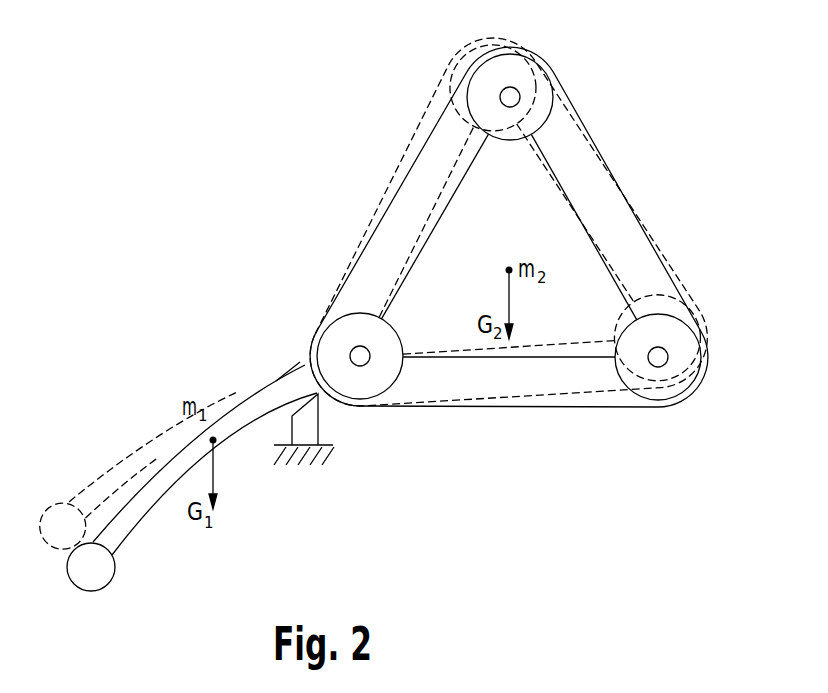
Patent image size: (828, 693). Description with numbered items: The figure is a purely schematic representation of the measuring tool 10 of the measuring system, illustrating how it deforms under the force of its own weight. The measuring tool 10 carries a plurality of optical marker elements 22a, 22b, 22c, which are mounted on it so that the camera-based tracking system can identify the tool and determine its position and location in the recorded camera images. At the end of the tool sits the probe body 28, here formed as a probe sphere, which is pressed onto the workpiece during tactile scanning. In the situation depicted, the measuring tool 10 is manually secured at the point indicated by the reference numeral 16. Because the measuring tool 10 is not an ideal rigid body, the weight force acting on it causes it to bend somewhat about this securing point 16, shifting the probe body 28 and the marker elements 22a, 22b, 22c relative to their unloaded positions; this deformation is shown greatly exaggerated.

The measuring tool 10 is at (246, 218).
The securing point 16 is at (298, 388).
The optical marker element 22a is at (367, 386).
The optical marker element 22b is at (545, 74).
The optical marker element 22c is at (660, 386).
The probe body 28 is at (95, 573).